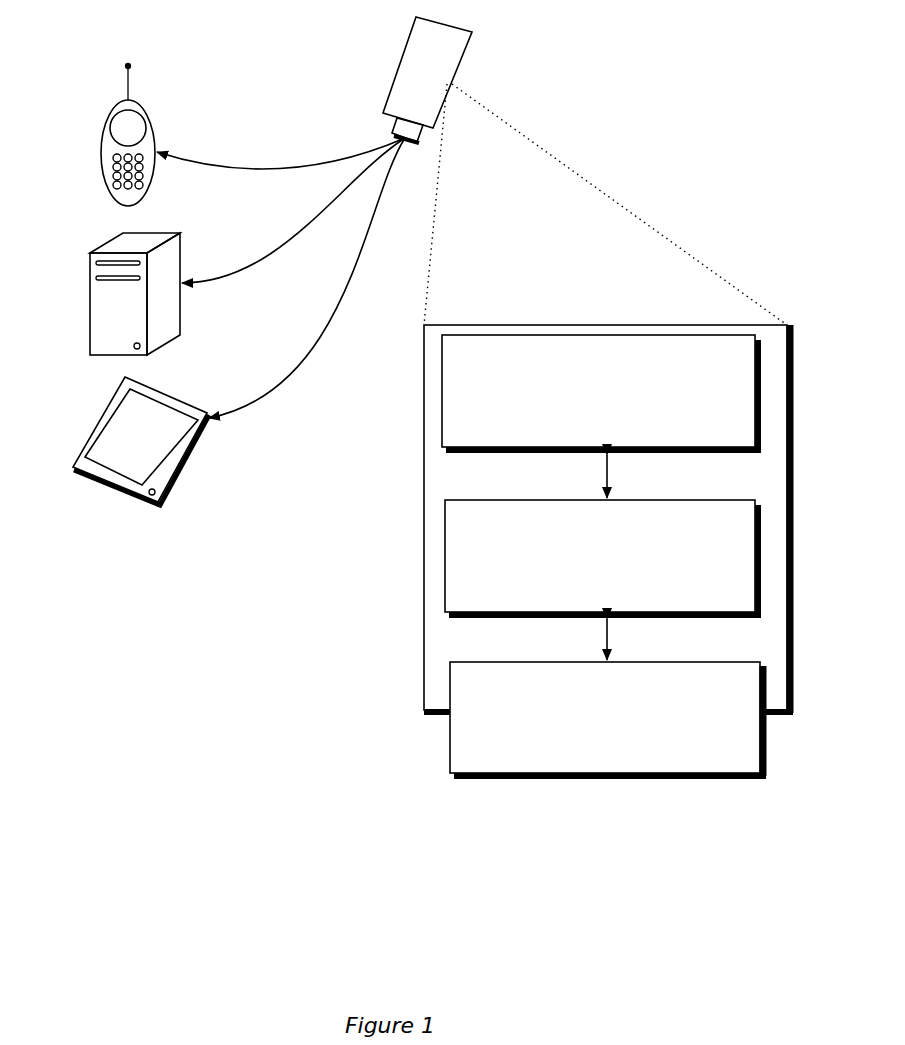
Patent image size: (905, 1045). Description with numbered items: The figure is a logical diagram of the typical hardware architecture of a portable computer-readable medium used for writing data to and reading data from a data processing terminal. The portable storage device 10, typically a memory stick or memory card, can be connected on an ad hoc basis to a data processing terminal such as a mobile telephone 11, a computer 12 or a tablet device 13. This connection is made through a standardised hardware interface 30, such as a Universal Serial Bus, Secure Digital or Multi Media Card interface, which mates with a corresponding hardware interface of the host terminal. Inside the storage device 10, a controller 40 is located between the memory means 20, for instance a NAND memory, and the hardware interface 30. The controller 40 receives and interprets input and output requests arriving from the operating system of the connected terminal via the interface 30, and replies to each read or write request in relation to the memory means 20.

The portable storage device 10 is at (400, 60).
The mobile telephone 11 is at (146, 104).
The computer 12 is at (178, 245).
The tablet device 13 is at (102, 418).
The memory means 20 is at (737, 409).
The hardware interface 30 is at (397, 132).
The controller 40 is at (737, 577).